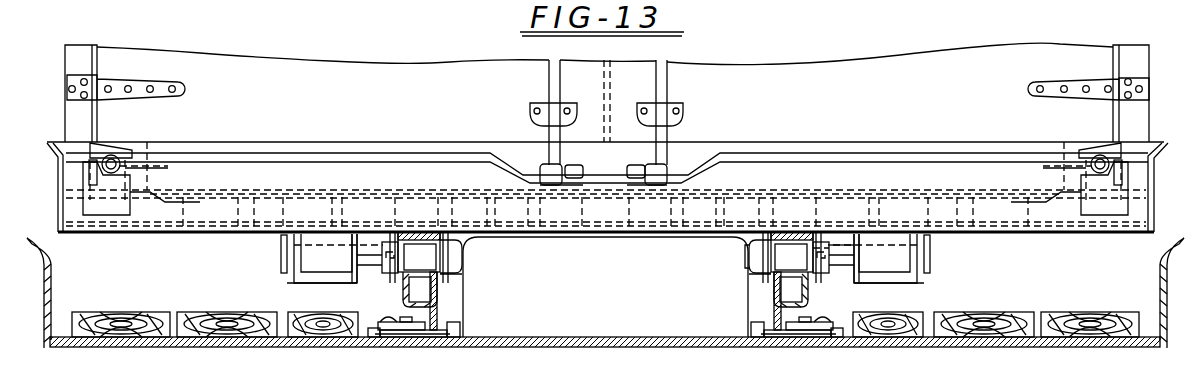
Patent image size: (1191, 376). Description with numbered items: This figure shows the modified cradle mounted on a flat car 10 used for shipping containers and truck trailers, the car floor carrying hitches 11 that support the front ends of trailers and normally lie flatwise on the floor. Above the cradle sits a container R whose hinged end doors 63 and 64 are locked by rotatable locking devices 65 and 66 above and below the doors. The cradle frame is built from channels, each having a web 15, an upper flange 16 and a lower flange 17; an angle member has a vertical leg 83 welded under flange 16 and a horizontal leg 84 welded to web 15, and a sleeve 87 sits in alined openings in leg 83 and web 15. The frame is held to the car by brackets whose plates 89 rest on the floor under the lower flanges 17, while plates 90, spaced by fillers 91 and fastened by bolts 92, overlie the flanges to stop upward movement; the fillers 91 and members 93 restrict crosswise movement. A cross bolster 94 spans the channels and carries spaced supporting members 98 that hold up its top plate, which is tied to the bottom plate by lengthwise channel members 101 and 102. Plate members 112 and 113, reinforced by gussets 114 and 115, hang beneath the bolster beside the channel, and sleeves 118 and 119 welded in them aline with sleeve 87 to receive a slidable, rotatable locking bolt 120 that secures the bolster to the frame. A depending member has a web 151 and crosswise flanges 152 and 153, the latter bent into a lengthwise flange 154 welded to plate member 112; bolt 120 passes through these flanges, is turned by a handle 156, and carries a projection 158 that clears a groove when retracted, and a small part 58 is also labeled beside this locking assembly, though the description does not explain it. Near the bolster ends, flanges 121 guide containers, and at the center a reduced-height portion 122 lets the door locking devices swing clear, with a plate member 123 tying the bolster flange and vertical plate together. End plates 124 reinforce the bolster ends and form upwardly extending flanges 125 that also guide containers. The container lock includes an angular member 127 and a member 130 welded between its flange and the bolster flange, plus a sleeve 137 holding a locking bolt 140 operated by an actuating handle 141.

The container R is at (76, 62).
The flat car 10 is at (52, 285).
The hitch 11 is at (666, 330).
The web 15 is at (779, 297).
The flange 16 is at (405, 233).
The lower flange 17 is at (416, 330).
The box 58 is at (352, 234).
The hinged end door 63 is at (354, 104).
The hinged end door 64 is at (864, 104).
The rotatable locking device 65 is at (553, 90).
The rotatable locking device 66 is at (663, 90).
The vertical leg 83 is at (824, 294).
The horizontal leg 84 is at (605, 290).
The sleeve 87 is at (423, 233).
The plate 89 is at (434, 337).
The plate 90 is at (602, 316).
The filler 91 is at (372, 333).
The bolt 92 is at (392, 322).
The member 93 is at (447, 326).
The cross bolster 94 is at (1089, 241).
The supporting member 98 is at (313, 197).
The channel member 101 is at (224, 198).
The channel member 102 is at (415, 197).
The plate member 112 is at (391, 283).
The plate member 113 is at (446, 283).
The gusset 114 is at (758, 250).
The gusset 115 is at (858, 246).
The sleeve 118 is at (827, 250).
The sleeve 119 is at (450, 273).
The locking bolt 120 is at (460, 265).
The flange 121 is at (90, 153).
The reduced-height portion 122 is at (592, 177).
The plate member 123 is at (388, 153).
The end plate 124 is at (60, 190).
The flange 125 is at (55, 158).
The angular member 127 is at (132, 208).
The member 130 is at (89, 180).
The sleeve 137 is at (117, 158).
The locking bolt 140 is at (128, 170).
The actuating handle 141 is at (175, 170).
The web 151 is at (318, 280).
The flange 152 is at (294, 283).
The flange 153 is at (352, 284).
The flange 154 is at (380, 283).
The handle 156 is at (281, 245).
The projection 158 is at (832, 257).